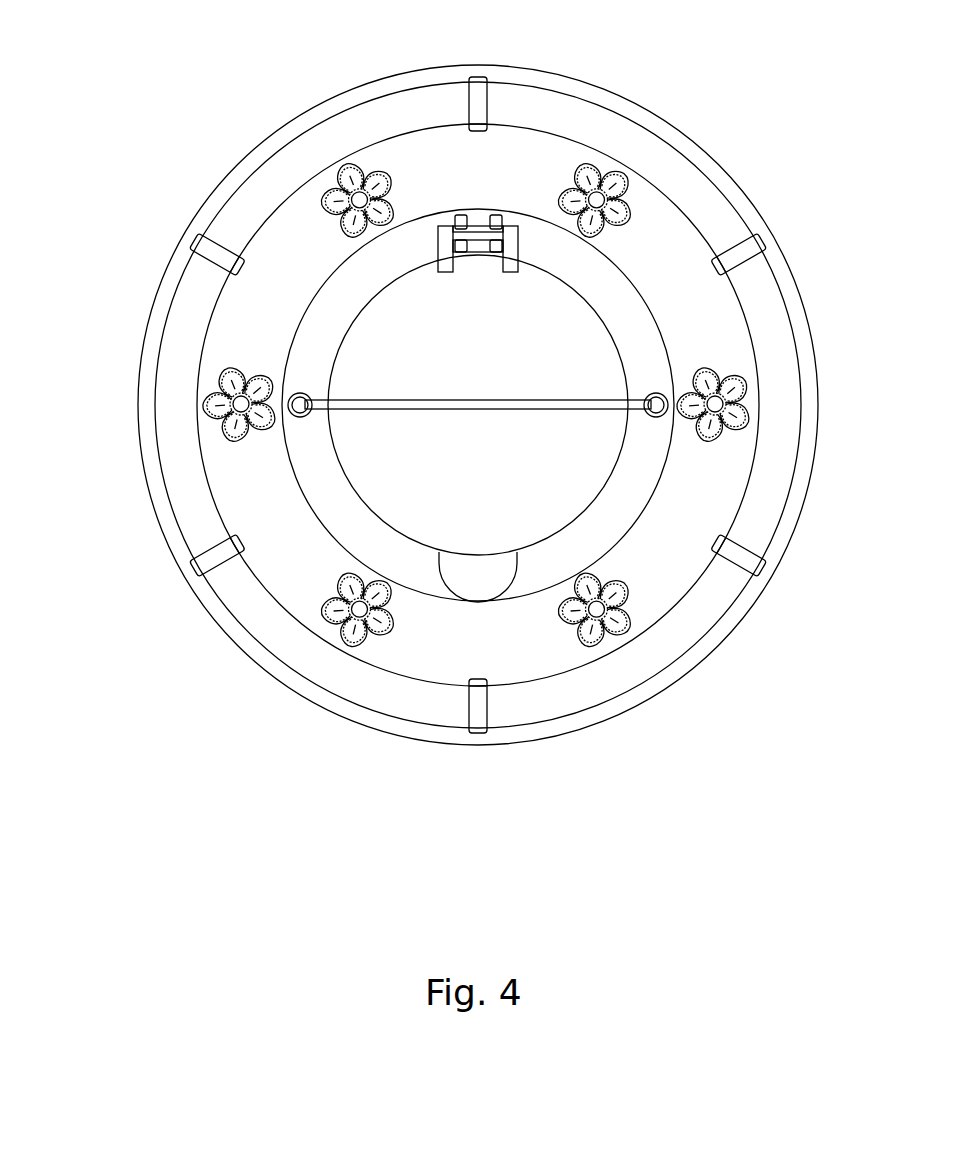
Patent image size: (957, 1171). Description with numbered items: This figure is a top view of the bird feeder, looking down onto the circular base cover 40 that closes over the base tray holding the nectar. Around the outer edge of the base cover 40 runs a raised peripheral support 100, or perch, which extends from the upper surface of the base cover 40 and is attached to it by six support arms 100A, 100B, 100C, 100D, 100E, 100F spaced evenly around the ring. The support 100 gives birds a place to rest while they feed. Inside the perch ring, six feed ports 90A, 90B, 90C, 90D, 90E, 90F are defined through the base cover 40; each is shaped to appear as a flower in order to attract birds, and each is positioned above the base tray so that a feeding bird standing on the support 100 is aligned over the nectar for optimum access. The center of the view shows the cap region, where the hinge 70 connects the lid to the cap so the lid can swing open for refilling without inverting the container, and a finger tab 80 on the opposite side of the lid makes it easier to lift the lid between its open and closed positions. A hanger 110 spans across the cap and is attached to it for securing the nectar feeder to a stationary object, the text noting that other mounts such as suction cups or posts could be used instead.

The base cover 40 is at (735, 458).
The hinge 70 is at (504, 212).
The finger tab 80 is at (492, 601).
The feed port 90A is at (722, 398).
The feed port 90B is at (602, 198).
The feed port 90C is at (356, 197).
The feed port 90D is at (240, 403).
The feed port 90E is at (340, 622).
The feed port 90F is at (622, 620).
The raised peripheral support 100 is at (742, 620).
The support arm 100A is at (752, 550).
The support arm 100B is at (735, 253).
The support arm 100C is at (466, 100).
The support arm 100D is at (212, 263).
The support arm 100E is at (222, 582).
The support arm 100F is at (470, 716).
The hanger 110 is at (380, 400).